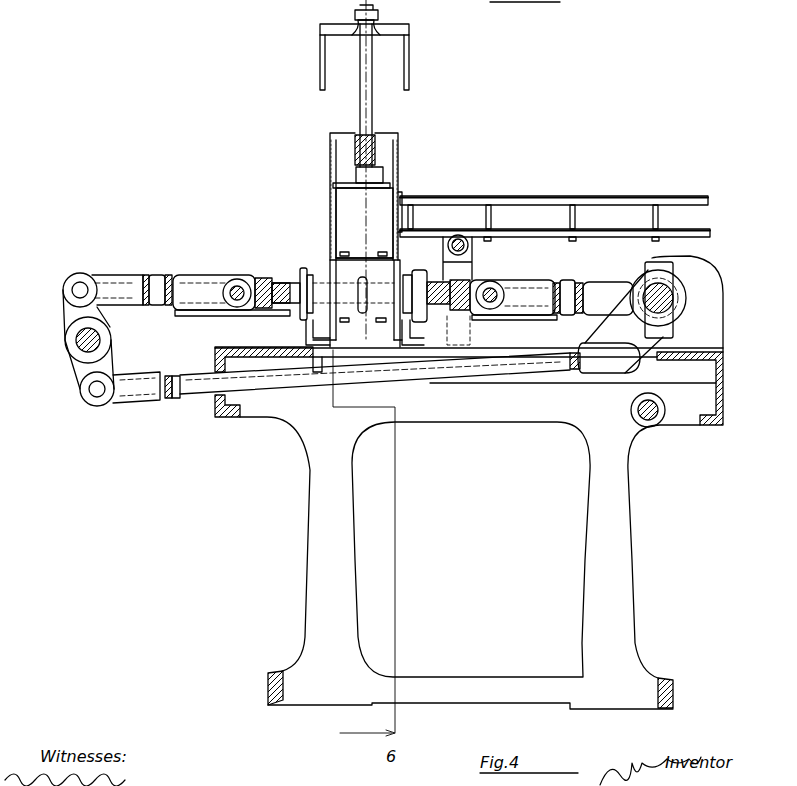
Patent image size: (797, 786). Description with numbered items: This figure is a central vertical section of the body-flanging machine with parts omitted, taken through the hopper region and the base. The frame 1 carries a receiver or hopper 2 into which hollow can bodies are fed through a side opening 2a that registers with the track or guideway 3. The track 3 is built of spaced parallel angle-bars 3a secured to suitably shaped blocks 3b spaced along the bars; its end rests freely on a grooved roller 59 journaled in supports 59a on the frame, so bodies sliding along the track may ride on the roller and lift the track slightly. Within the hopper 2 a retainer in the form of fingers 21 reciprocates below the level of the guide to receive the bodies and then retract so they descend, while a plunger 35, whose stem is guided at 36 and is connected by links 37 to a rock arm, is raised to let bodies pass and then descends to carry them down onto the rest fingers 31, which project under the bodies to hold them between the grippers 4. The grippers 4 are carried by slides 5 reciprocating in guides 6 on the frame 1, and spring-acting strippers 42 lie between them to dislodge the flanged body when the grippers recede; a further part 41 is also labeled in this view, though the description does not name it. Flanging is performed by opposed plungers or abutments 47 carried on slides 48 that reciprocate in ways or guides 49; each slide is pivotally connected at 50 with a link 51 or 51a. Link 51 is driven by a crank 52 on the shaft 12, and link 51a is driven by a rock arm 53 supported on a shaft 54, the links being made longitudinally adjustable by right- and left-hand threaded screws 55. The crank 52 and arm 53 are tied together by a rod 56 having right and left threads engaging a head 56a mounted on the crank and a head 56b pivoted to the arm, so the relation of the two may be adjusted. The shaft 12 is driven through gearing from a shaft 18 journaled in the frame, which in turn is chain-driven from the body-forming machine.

The frame 1 is at (469, 528).
The receiver or hopper 2 is at (336, 228).
The side opening 2a is at (400, 193).
The track or guideway 3 is at (450, 218).
The angle-bars 3a is at (716, 250).
The blocks 3b is at (658, 216).
The grippers 4 is at (360, 290).
The slides 5 is at (352, 293).
The guides 6 is at (306, 325).
The shaft 12 is at (664, 294).
The shaft 18 is at (636, 410).
The retainer fingers 21 is at (381, 242).
The rest fingers 31 is at (382, 320).
The plunger 35 is at (352, 183).
The stem guide 36 is at (373, 146).
The links 37 is at (320, 55).
The collar 41 is at (418, 278).
The strippers 42 is at (406, 272).
The plungers or abutments 47 is at (300, 272).
The slides 48 is at (262, 310).
The ways or guides 49 is at (178, 318).
The pivotal connection 50 is at (236, 292).
The link 51 is at (605, 290).
The link 51a is at (118, 278).
The crank 52 is at (668, 308).
The rock arm 53 is at (70, 313).
The shaft 54 is at (84, 342).
The screws 55 is at (156, 278).
The link or rod 56 is at (196, 396).
The head 56a is at (616, 321).
The head 56b is at (152, 402).
The grooved roller 59 is at (462, 238).
The supports 59a is at (462, 264).